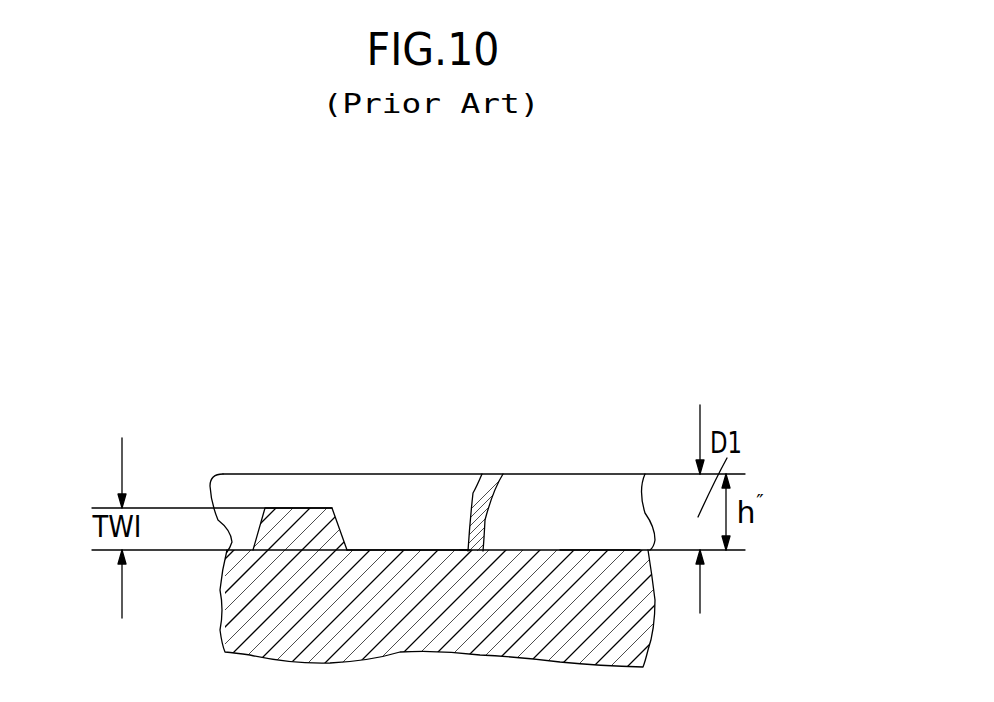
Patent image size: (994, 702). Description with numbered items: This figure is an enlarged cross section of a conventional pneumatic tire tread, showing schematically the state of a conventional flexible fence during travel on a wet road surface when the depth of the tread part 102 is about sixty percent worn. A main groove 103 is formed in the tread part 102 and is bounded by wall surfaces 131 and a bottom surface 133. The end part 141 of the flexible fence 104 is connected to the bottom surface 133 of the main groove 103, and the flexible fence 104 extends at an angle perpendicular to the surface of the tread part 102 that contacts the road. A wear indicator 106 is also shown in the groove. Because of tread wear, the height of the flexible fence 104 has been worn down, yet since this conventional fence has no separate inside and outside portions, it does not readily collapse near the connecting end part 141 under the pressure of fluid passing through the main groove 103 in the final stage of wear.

The tread part 102 is at (544, 474).
The main groove 103 is at (293, 497).
The flexible fence 104 is at (472, 495).
The wear indicator 106 is at (262, 507).
The wall surfaces 131 is at (523, 527).
The bottom surface 133 is at (373, 547).
The end part 141 is at (468, 543).